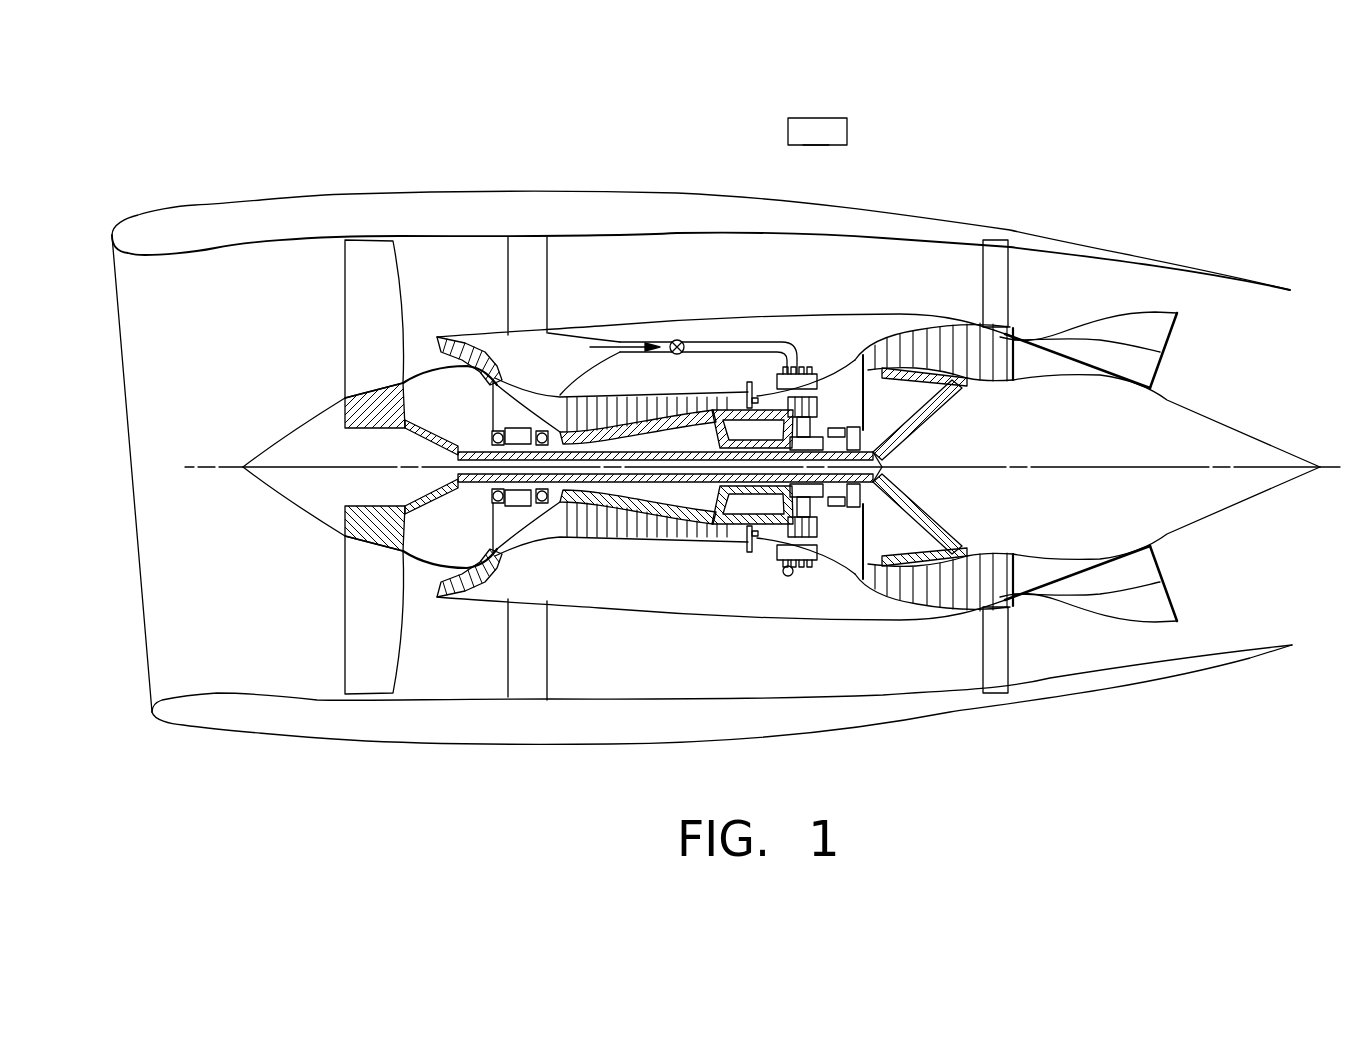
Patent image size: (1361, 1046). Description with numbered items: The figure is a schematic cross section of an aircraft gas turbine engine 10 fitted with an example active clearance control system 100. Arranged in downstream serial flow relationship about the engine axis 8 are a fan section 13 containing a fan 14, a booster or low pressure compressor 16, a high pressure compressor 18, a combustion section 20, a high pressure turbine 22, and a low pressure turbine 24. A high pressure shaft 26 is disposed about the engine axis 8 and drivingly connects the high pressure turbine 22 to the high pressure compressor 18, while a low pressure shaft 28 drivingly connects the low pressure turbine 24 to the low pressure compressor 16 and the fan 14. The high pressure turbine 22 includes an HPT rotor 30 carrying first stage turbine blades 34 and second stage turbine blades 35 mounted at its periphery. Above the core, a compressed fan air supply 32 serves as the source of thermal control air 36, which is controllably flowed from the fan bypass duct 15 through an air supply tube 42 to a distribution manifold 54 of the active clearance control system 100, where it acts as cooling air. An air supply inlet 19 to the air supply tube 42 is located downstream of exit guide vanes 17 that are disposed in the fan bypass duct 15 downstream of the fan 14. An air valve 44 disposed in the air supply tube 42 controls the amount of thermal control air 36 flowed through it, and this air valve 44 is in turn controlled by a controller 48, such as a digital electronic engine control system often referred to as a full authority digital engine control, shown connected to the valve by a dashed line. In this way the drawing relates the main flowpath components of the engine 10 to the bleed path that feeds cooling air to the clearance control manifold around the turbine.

The engine axis 8 is at (233, 458).
The aircraft gas turbine engine 10 is at (287, 122).
The fan section 13 is at (368, 226).
The fan 14 is at (356, 313).
The fan bypass duct 15 is at (573, 253).
The booster or low pressure compressor 16 is at (462, 341).
The exit guide vanes 17 is at (509, 309).
The high pressure compressor 18 is at (607, 537).
The air supply inlet 19 is at (568, 327).
The combustion section 20 is at (765, 549).
The high pressure turbine 22 is at (829, 562).
The low pressure turbine 24 is at (933, 621).
The high pressure shaft 26 is at (748, 533).
The low pressure shaft 28 is at (675, 486).
The HPT rotor 30 is at (833, 504).
The compressed fan air supply 32 is at (628, 334).
The first stage turbine blades 34 is at (795, 408).
The second stage turbine blades 35 is at (813, 397).
The thermal control air 36 is at (612, 352).
The air supply tube 42 is at (738, 355).
The air valve 44 is at (677, 357).
The controller 48 is at (788, 132).
The distribution manifold 54 is at (803, 354).
The active clearance control system 100 is at (713, 337).